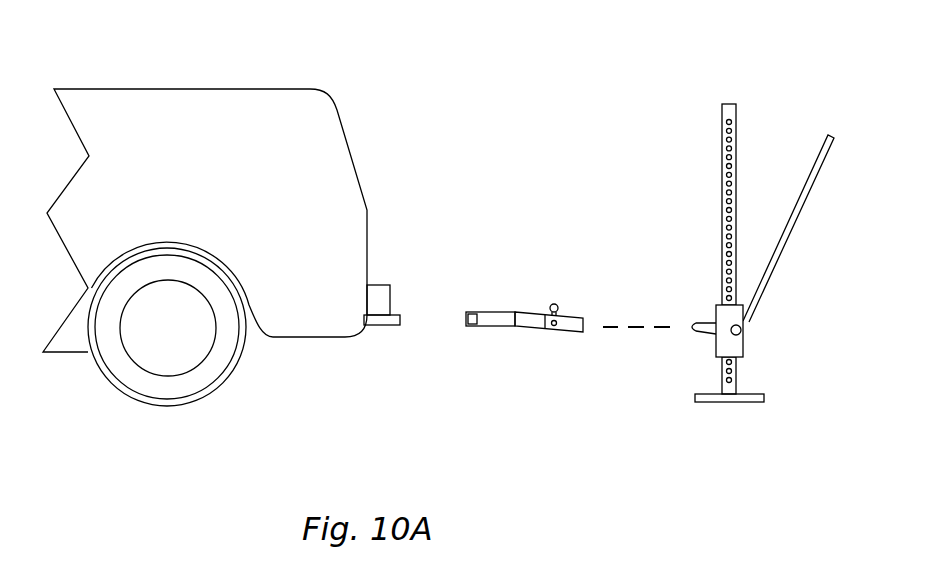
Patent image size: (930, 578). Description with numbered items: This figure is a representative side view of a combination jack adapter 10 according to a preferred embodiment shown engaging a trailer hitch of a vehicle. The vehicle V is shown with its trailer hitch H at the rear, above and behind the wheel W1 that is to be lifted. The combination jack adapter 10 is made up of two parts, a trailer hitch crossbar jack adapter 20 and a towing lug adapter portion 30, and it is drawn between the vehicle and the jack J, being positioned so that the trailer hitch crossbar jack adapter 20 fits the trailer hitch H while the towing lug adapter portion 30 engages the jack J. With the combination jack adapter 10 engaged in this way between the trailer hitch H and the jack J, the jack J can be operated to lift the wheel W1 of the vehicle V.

The vehicle V is at (163, 89).
The wheel W1 is at (108, 360).
The trailer hitch H is at (398, 313).
The combination jack adapter 10 is at (365, 393).
The trailer hitch crossbar jack adapter 20 is at (362, 344).
The towing lug adapter portion 30 is at (576, 372).
The jack J is at (723, 148).